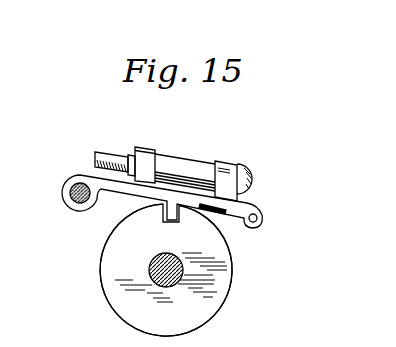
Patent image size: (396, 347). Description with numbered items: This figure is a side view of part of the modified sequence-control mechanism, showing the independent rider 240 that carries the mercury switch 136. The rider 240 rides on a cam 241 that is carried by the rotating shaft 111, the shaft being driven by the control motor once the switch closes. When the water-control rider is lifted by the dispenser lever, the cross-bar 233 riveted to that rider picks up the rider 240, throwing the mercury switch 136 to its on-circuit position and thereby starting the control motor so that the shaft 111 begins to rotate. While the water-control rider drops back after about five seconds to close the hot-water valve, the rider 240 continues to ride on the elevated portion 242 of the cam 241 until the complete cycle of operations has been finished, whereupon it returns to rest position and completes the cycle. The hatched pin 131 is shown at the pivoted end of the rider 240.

The mercury switch 136 is at (183, 168).
The rider 240 is at (254, 206).
The cross-bar 233 is at (225, 213).
The cam 241 is at (231, 258).
The shaft 111 is at (183, 281).
The pivot pin 131 is at (72, 197).
The elevated portion 242 is at (99, 272).